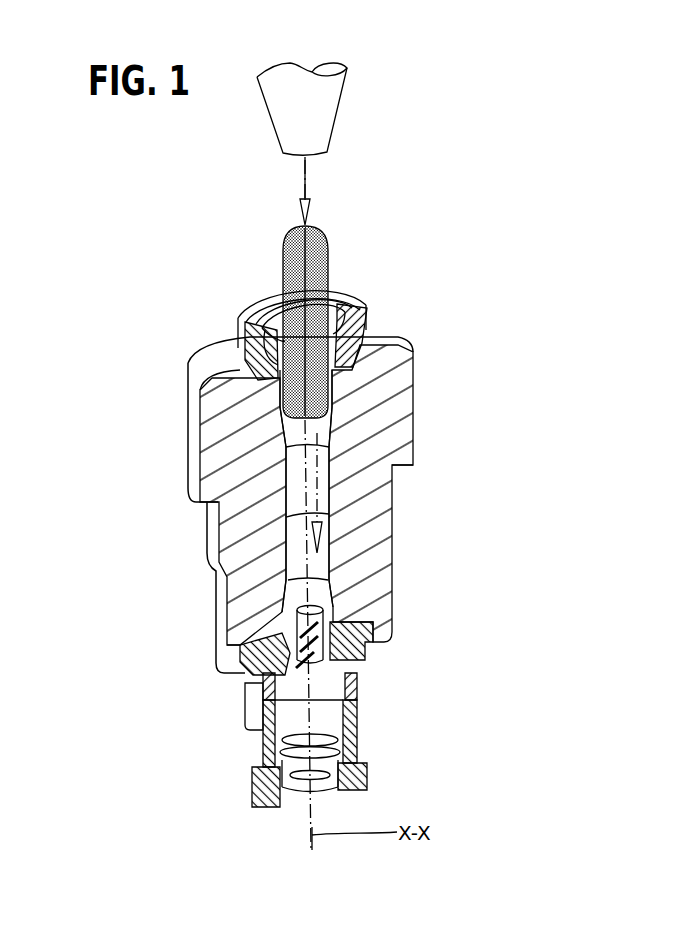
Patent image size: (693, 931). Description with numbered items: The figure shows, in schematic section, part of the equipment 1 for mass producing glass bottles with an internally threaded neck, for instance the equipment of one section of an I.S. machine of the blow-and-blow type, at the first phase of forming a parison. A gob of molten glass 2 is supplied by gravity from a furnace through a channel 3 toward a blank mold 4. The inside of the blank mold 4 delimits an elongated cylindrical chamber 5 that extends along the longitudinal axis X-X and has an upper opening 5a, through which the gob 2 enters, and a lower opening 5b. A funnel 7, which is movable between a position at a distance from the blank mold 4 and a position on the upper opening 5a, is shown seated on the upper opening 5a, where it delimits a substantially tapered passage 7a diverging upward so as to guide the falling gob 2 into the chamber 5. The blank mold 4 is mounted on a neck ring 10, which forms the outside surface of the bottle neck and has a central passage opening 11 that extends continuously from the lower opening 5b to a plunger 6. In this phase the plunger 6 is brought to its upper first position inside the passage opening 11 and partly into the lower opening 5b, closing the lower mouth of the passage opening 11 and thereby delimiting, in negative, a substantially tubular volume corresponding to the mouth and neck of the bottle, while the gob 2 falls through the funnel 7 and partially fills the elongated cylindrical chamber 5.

The equipment 1 is at (495, 516).
The gob of molten glass 2 is at (329, 262).
The channels 3 is at (316, 113).
The blank mold 4 is at (413, 420).
The elongated cylindrical chamber 5 is at (307, 506).
The upper opening 5a is at (334, 423).
The lower opening 5b is at (327, 600).
The plunger 6 is at (366, 660).
The funnel 7 is at (238, 340).
The tapered passage 7a is at (362, 326).
The neck ring 10 is at (380, 682).
The passage opening 11 is at (333, 628).